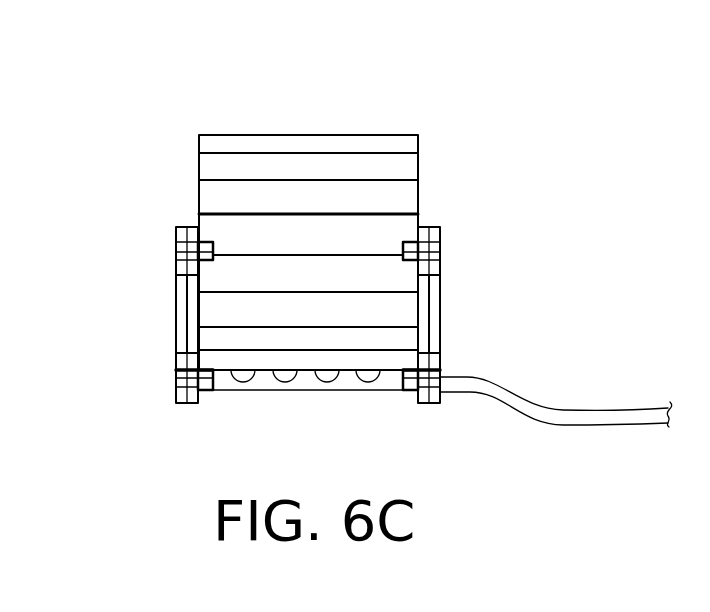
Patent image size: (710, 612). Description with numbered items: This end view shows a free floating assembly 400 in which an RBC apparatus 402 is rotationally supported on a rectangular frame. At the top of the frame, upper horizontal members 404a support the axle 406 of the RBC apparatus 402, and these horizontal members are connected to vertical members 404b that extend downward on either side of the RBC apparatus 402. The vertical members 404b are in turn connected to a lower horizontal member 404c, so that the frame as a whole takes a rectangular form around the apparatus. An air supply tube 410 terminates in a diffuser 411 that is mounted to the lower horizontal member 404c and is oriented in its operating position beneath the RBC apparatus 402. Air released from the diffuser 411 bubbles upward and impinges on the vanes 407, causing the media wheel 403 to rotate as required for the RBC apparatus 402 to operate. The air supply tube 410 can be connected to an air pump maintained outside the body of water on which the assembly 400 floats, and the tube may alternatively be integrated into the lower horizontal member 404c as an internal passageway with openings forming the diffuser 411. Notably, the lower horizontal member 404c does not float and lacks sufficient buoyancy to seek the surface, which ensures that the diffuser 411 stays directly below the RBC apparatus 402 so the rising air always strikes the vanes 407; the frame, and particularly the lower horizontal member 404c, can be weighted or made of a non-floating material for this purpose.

The assembly 400 is at (292, 123).
The RBC apparatus 402 is at (420, 148).
The media wheel 403 is at (208, 138).
The upper horizontal members 404a is at (441, 242).
The vertical members 404b is at (441, 302).
The lower horizontal member 404c is at (225, 382).
The axle 406 is at (408, 247).
The vanes 407 is at (400, 168).
The air supply tube 410 is at (642, 427).
The diffuser 411 is at (257, 385).